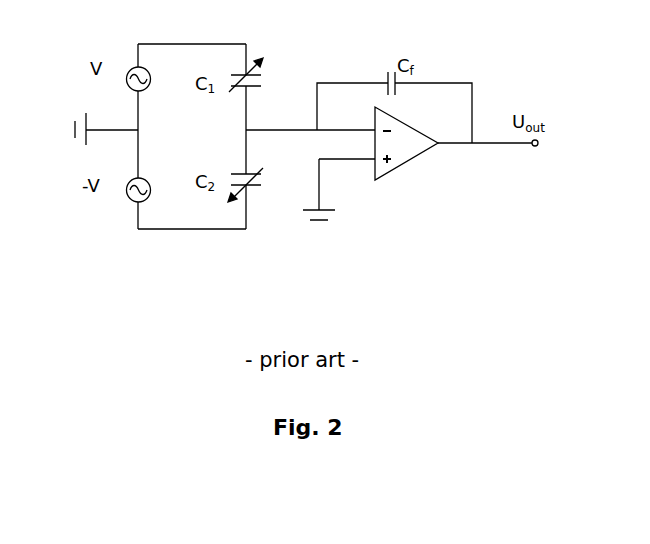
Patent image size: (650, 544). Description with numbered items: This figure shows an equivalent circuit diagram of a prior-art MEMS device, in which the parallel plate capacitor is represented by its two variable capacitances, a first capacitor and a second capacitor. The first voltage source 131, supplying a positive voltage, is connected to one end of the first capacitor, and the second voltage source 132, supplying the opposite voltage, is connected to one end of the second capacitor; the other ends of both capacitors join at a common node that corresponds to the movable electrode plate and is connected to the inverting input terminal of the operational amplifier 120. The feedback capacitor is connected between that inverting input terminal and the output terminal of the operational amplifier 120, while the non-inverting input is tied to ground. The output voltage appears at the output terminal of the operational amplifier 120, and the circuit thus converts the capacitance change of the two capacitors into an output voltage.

The first voltage source 131 is at (130, 69).
The second voltage source 132 is at (134, 201).
The operational amplifier 120 is at (408, 163).